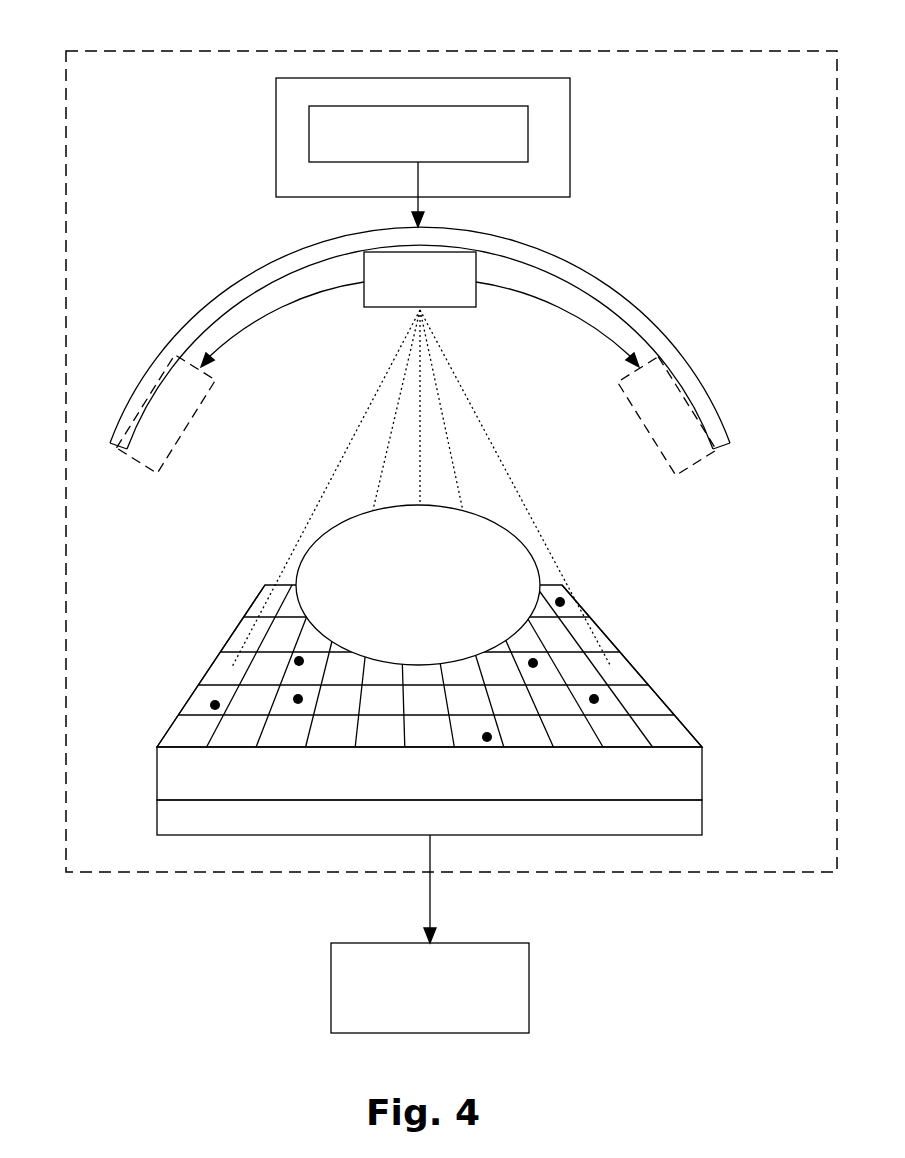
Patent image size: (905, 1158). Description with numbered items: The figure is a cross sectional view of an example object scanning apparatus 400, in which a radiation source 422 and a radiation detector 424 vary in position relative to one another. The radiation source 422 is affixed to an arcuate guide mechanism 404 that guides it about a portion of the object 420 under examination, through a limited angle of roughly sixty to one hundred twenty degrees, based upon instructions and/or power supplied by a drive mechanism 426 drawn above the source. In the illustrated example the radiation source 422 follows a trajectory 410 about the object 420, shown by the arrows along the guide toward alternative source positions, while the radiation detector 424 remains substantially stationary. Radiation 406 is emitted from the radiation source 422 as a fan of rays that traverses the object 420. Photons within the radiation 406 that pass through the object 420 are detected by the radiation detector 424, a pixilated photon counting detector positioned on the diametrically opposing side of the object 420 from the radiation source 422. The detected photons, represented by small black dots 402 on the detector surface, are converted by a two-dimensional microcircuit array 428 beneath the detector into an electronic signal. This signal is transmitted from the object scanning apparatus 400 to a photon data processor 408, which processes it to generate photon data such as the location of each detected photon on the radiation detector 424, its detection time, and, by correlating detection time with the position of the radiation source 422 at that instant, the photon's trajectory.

The object scanning apparatus 400 is at (118, 51).
The drive mechanism 426 is at (528, 106).
The guide mechanism 404 is at (692, 369).
The trajectory 410 is at (577, 320).
The radiation source 422 is at (476, 261).
The radiation 406 is at (462, 380).
The object 420 is at (520, 541).
The small black dots 402 is at (594, 699).
The radiation detector 424 is at (702, 768).
The two-dimensional microcircuit array 428 is at (702, 815).
The photon data processor 408 is at (331, 987).